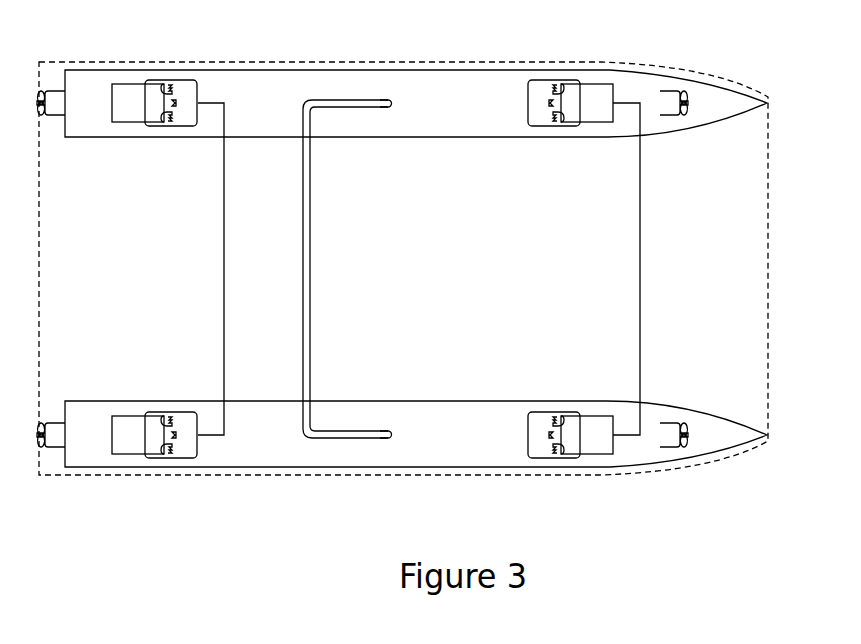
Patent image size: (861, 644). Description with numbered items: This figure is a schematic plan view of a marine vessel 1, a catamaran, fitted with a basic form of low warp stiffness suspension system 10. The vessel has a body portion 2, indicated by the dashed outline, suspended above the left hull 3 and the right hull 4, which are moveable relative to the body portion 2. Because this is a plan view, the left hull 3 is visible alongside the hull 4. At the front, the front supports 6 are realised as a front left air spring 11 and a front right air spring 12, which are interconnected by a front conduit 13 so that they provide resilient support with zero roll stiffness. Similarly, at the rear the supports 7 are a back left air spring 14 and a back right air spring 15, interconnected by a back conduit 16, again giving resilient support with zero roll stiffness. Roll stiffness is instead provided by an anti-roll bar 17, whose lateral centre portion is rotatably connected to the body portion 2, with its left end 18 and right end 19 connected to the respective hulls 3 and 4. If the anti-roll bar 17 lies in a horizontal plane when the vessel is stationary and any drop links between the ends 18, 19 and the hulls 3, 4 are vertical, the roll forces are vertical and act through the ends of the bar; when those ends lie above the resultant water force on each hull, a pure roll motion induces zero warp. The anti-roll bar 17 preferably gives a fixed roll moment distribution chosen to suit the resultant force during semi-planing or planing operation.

The marine vessel 1 is at (755, 57).
The body portion 2 is at (768, 190).
The left hull 3 is at (453, 92).
The hull 4 is at (451, 452).
The front support 6 is at (528, 133).
The rear combination of sliding arm and support 7 is at (112, 133).
The low warp stiffness suspension system 10 is at (677, 437).
The front left air spring 11 is at (580, 124).
The front right air spring 12 is at (580, 413).
The front conduit 13 is at (640, 243).
The back left air spring 14 is at (165, 125).
The back right air spring 15 is at (165, 413).
The back conduit 16 is at (224, 243).
The anti-roll bar 17 is at (307, 245).
The left end of the anti-roll bar 18 is at (388, 105).
The right end of the anti-roll bar 19 is at (388, 434).